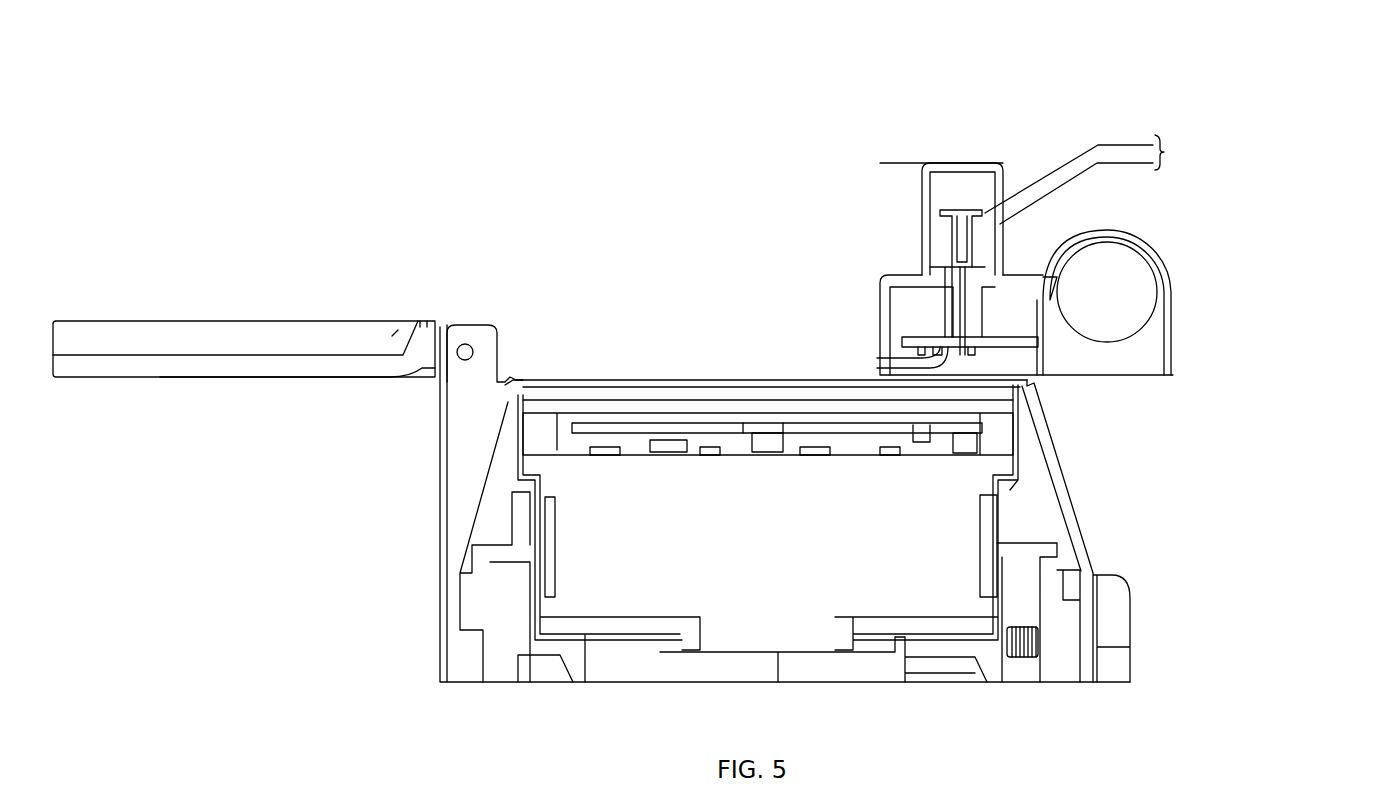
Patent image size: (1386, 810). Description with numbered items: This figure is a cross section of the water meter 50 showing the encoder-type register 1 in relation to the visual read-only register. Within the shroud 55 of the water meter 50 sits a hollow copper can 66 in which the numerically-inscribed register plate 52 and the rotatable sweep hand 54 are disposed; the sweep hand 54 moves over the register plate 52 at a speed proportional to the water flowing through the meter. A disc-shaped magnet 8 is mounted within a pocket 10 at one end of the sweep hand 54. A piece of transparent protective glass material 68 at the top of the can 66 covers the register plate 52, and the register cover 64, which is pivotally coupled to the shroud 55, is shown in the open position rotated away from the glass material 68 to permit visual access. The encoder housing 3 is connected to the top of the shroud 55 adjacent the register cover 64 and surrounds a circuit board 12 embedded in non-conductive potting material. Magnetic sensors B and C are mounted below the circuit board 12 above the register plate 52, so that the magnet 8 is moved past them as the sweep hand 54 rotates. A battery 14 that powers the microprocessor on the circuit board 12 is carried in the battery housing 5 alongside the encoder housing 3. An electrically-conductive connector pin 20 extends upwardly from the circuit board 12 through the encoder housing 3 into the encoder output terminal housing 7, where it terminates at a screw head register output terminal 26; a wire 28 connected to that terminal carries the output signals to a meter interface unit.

The encoder-type register 1 is at (888, 160).
The encoder housing 3 is at (880, 285).
The battery housing 5 is at (1177, 352).
The encoder output terminal housing 7 is at (922, 207).
The magnet 8 is at (953, 437).
The pocket 10 is at (925, 432).
The circuit board 12 is at (1003, 307).
The battery 14 is at (1127, 282).
The connector pin 20 is at (957, 318).
The register output terminal 26 is at (943, 250).
The wire 28 is at (1100, 146).
The water meter 50 is at (1117, 512).
The register plate 52 is at (712, 455).
The sweep hand 54 is at (764, 427).
The shroud 55 is at (440, 557).
The register cover 64 is at (162, 318).
The copper can 66 is at (540, 467).
The transparent protective material 68 is at (690, 382).
The magnetic sensor B is at (877, 368).
The magnetic sensor C is at (877, 358).